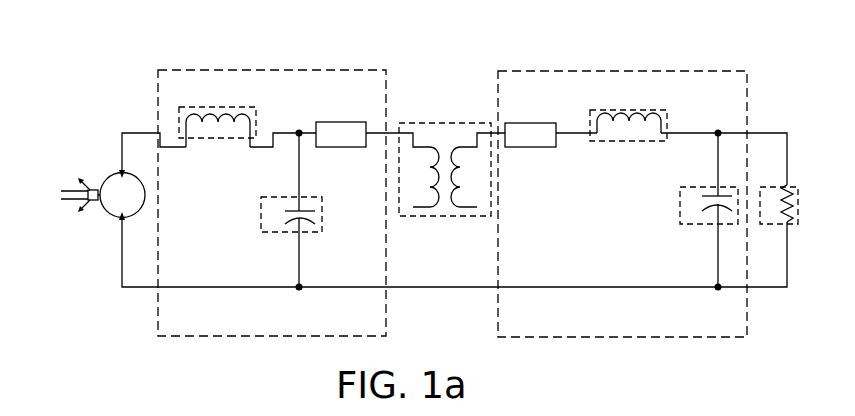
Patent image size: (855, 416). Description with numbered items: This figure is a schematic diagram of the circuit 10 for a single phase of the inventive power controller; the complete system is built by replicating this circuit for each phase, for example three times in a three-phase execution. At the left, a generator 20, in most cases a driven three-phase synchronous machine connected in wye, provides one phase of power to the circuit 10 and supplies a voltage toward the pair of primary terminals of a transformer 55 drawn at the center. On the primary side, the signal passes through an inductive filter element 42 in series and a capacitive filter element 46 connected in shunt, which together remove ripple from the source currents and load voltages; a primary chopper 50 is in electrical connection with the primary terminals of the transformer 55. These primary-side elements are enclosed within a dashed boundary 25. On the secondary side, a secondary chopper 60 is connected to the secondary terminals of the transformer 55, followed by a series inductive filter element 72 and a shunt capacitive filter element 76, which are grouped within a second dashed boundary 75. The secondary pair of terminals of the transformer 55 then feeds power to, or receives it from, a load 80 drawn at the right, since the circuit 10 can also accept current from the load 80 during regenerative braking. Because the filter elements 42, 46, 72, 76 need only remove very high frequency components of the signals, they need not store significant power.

The circuit 10 is at (476, 36).
The generator 20 is at (129, 202).
The first matching network 25 is at (362, 102).
The inductive filter element 42 is at (224, 134).
The capacitive filter element 46 is at (277, 222).
The primary chopper 50 is at (347, 140).
The transformer 55 is at (452, 144).
The secondary chopper 60 is at (536, 140).
The inductive filter element 72 is at (634, 136).
The second matching network 75 is at (735, 100).
The capacitive filter element 76 is at (696, 212).
The load 80 is at (779, 212).